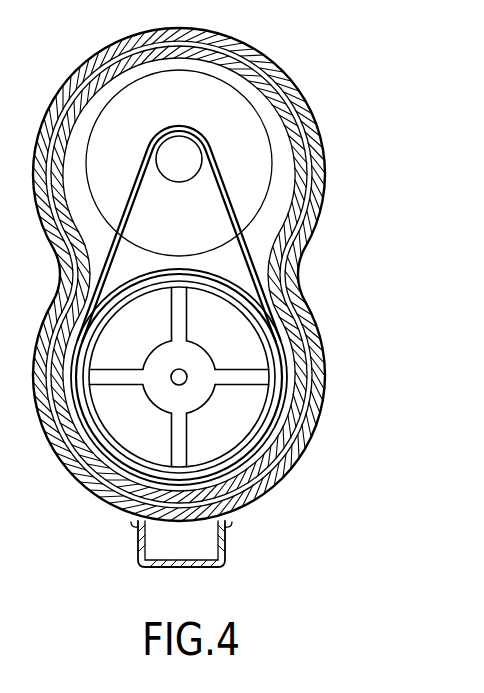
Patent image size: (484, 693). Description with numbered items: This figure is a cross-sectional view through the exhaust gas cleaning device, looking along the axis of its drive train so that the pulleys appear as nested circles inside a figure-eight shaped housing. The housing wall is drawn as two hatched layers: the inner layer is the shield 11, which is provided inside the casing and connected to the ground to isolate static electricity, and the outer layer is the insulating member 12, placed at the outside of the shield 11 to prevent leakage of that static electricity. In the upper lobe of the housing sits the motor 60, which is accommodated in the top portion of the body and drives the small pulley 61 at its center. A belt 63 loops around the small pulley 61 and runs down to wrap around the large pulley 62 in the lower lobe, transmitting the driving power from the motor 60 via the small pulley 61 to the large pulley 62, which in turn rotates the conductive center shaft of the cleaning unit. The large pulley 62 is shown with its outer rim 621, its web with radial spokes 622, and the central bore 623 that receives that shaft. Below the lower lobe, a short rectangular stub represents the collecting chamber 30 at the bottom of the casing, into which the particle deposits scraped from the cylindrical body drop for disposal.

The shield 11 is at (72, 475).
The insulating member 12 is at (55, 440).
The collecting chamber 30 is at (210, 543).
The motor 60 is at (130, 92).
The small pulley 61 is at (183, 157).
The large pulley 62 is at (273, 342).
The belt 63 is at (233, 208).
The wheel rim 621 is at (237, 285).
The wheel hub and spokes 622 is at (228, 413).
The shaft hole 623 is at (185, 374).